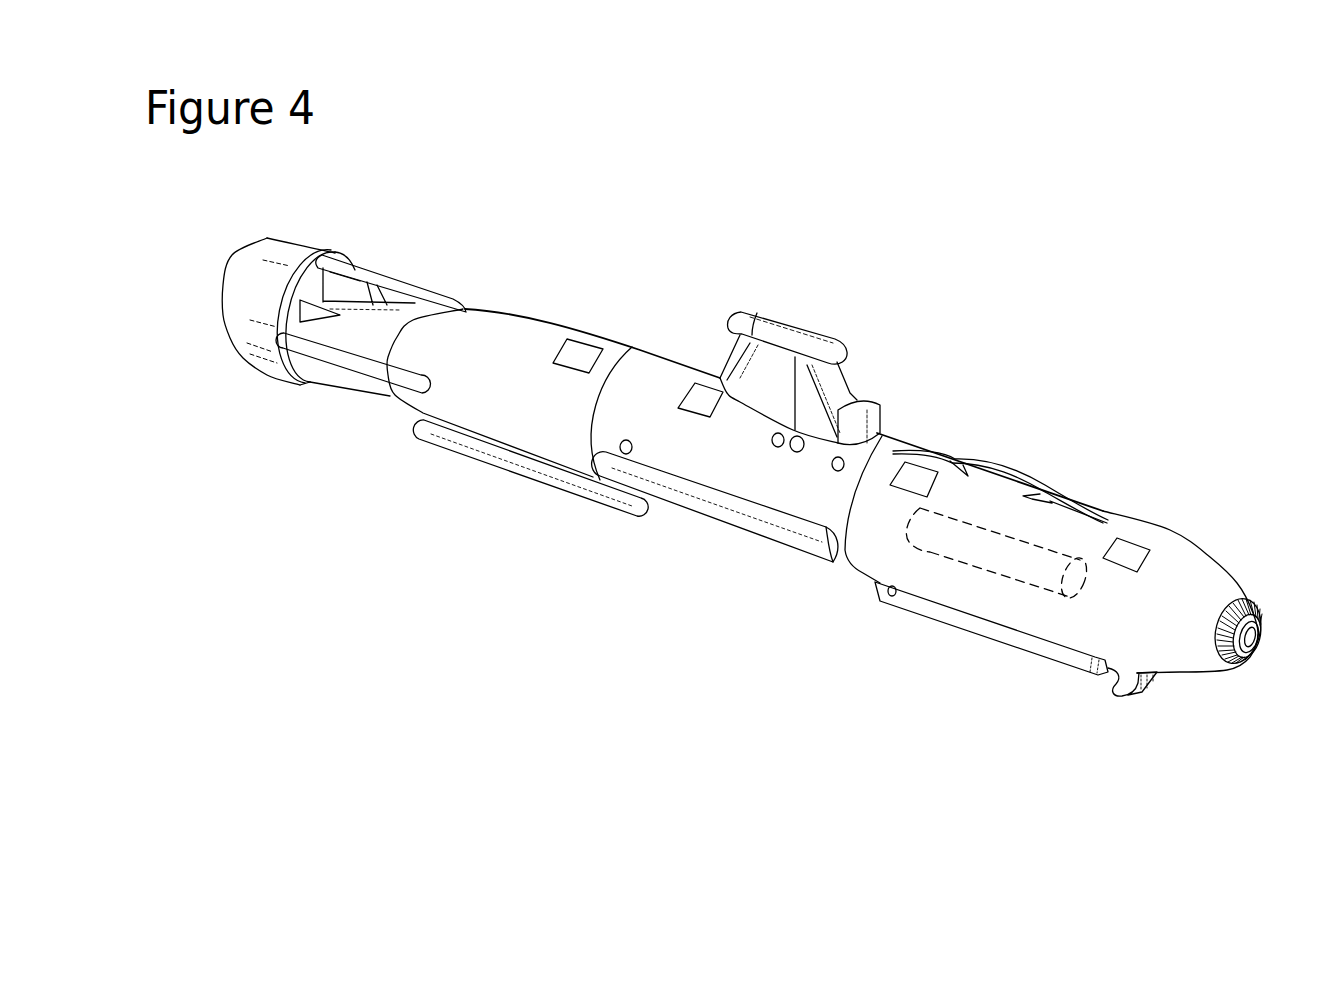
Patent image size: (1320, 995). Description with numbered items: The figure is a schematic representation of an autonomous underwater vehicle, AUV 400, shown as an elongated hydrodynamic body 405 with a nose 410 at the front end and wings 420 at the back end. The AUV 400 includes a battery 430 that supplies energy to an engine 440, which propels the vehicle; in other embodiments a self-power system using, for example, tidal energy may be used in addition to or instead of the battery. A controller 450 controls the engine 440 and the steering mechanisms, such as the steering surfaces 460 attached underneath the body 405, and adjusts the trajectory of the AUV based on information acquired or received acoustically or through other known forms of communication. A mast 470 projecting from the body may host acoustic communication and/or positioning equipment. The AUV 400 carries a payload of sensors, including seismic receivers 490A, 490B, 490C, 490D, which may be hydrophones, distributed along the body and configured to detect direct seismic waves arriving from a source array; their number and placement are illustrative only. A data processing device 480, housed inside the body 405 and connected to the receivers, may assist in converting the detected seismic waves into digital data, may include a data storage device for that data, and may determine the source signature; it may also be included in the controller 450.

The autonomous underwater vehicle 400 is at (1005, 286).
The hydrodynamic body 405 is at (1185, 656).
The nose 410 is at (1243, 662).
The wings 420 is at (367, 378).
The battery 430 is at (502, 360).
The engine 440 is at (222, 308).
The controller 450 is at (653, 390).
The steering surfaces 460 is at (877, 585).
The mast 470 is at (830, 383).
The data processing device 480 is at (987, 570).
The seismic receiver 490A is at (577, 358).
The seismic receiver 490B is at (698, 400).
The seismic receiver 490C is at (910, 480).
The seismic receiver 490D is at (1127, 557).